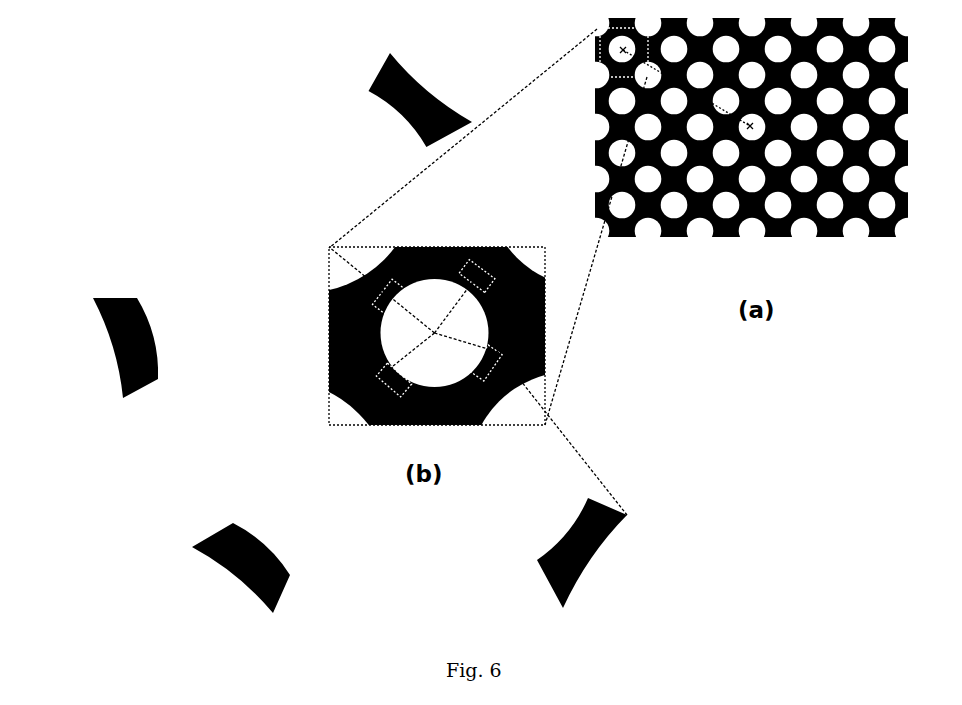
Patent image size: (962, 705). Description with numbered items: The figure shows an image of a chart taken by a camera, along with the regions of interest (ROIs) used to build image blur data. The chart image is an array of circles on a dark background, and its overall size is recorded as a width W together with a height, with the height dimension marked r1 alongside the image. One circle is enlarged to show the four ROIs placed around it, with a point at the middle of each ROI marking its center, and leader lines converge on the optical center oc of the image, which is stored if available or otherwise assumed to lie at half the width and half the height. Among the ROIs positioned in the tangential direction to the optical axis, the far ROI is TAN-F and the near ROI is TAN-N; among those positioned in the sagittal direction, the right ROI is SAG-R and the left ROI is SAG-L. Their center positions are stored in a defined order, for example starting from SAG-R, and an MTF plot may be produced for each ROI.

The height of lens array region r1 is at (913, 18).
The width W is at (910, 245).
The optical center oc is at (434, 333).
The right sagittal ROI SAG-R is at (463, 272).
The far tangential ROI TAN-F is at (391, 299).
The left sagittal ROI SAG-L is at (290, 575).
The near tangential ROI TAN-N is at (537, 560).